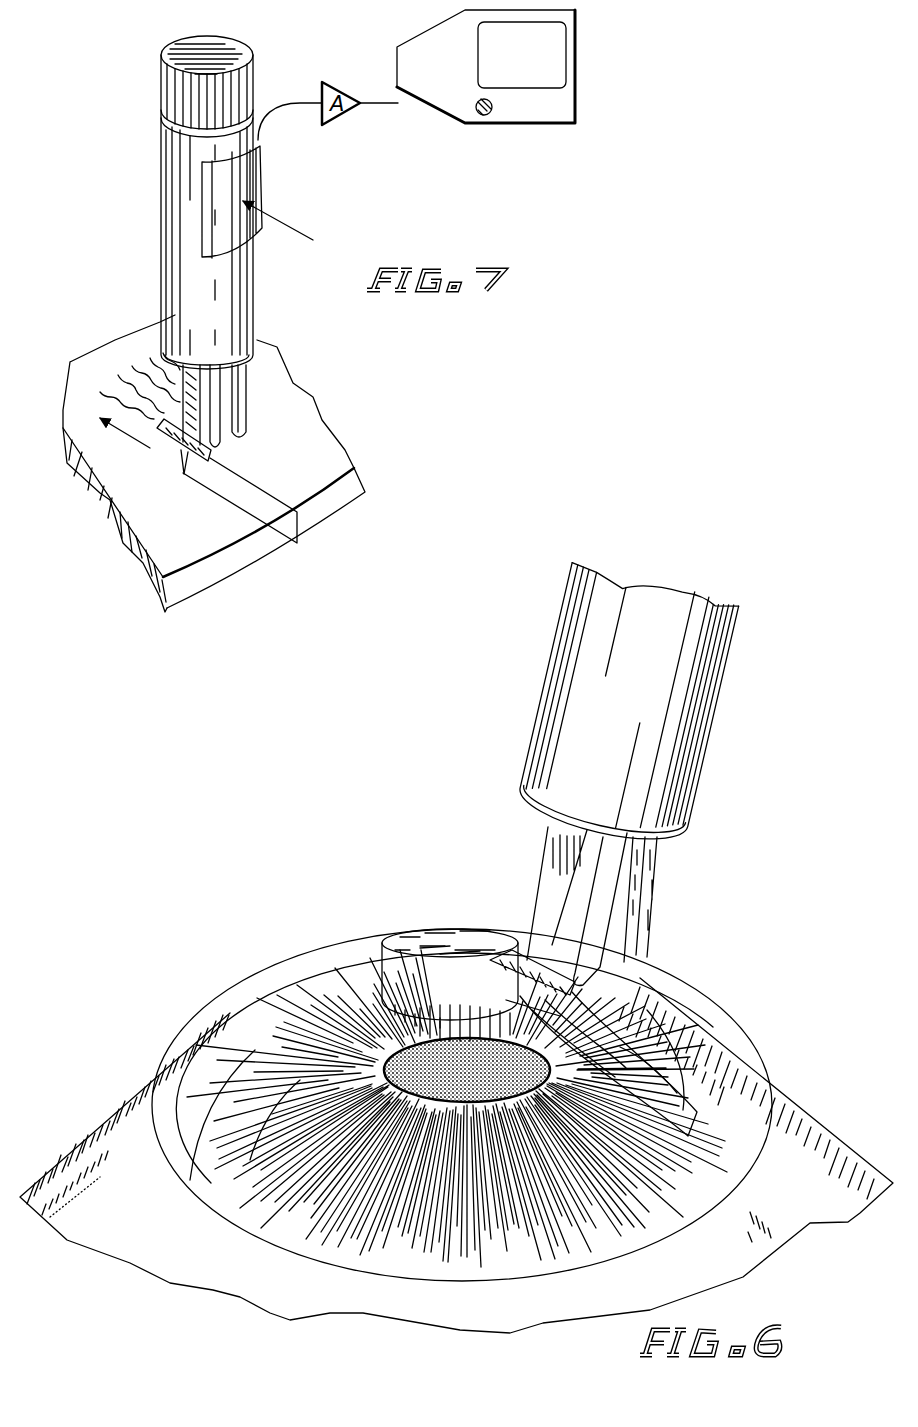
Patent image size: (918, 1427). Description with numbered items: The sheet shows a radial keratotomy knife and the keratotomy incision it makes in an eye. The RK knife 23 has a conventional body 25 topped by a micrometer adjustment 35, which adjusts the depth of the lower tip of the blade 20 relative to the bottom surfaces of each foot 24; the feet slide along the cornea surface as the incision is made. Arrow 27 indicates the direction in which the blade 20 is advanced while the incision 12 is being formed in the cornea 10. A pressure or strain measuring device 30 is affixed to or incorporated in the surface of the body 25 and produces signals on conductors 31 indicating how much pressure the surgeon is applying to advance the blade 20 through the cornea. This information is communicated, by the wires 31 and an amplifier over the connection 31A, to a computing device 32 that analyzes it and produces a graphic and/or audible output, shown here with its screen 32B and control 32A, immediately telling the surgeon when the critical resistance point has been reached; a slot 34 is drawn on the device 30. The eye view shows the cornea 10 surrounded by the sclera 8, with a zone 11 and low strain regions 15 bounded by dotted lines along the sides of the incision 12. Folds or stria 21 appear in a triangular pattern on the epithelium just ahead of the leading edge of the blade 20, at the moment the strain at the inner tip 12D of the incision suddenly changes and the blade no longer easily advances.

In FIG. 6, the sclera 8 is at (117, 1238).
In FIG. 7, the cornea 10 is at (223, 463).
In FIG. 6, the cornea 10 is at (436, 1083).
In FIG. 6, the zone 11 is at (412, 942).
In FIG. 7, the incision 12 is at (240, 472).
In FIG. 6, the incision 12 is at (680, 1122).
In FIG. 6, the inner tip of the incision 12D is at (506, 996).
In FIG. 6, the low strain regions 15 is at (648, 1050).
In FIG. 7, the blade 20 is at (177, 458).
In FIG. 6, the blade 20 is at (548, 851).
In FIG. 7, the stria 21 is at (118, 407).
In FIG. 6, the stria 21 is at (455, 940).
In FIG. 7, the RK knife 23 is at (216, 202).
In FIG. 6, the RK knife 23 is at (708, 763).
In FIG. 7, the foot 24 is at (245, 402).
In FIG. 6, the foot 24 is at (630, 913).
In FIG. 7, the body 25 is at (162, 302).
In FIG. 7, the arrow 27 is at (120, 444).
In FIG. 7, the pressure or strain measuring device 30 is at (260, 183).
In FIG. 7, the conductors 31 is at (297, 106).
In FIG. 7, the amplifier output cable 31A is at (382, 107).
In FIG. 7, the computing device 32 is at (519, 86).
In FIG. 7, the control knob 32A is at (491, 115).
In FIG. 7, the display screen 32B is at (557, 53).
In FIG. 7, the slot 34 is at (293, 225).
In FIG. 7, the micrometer adjustment 35 is at (253, 72).